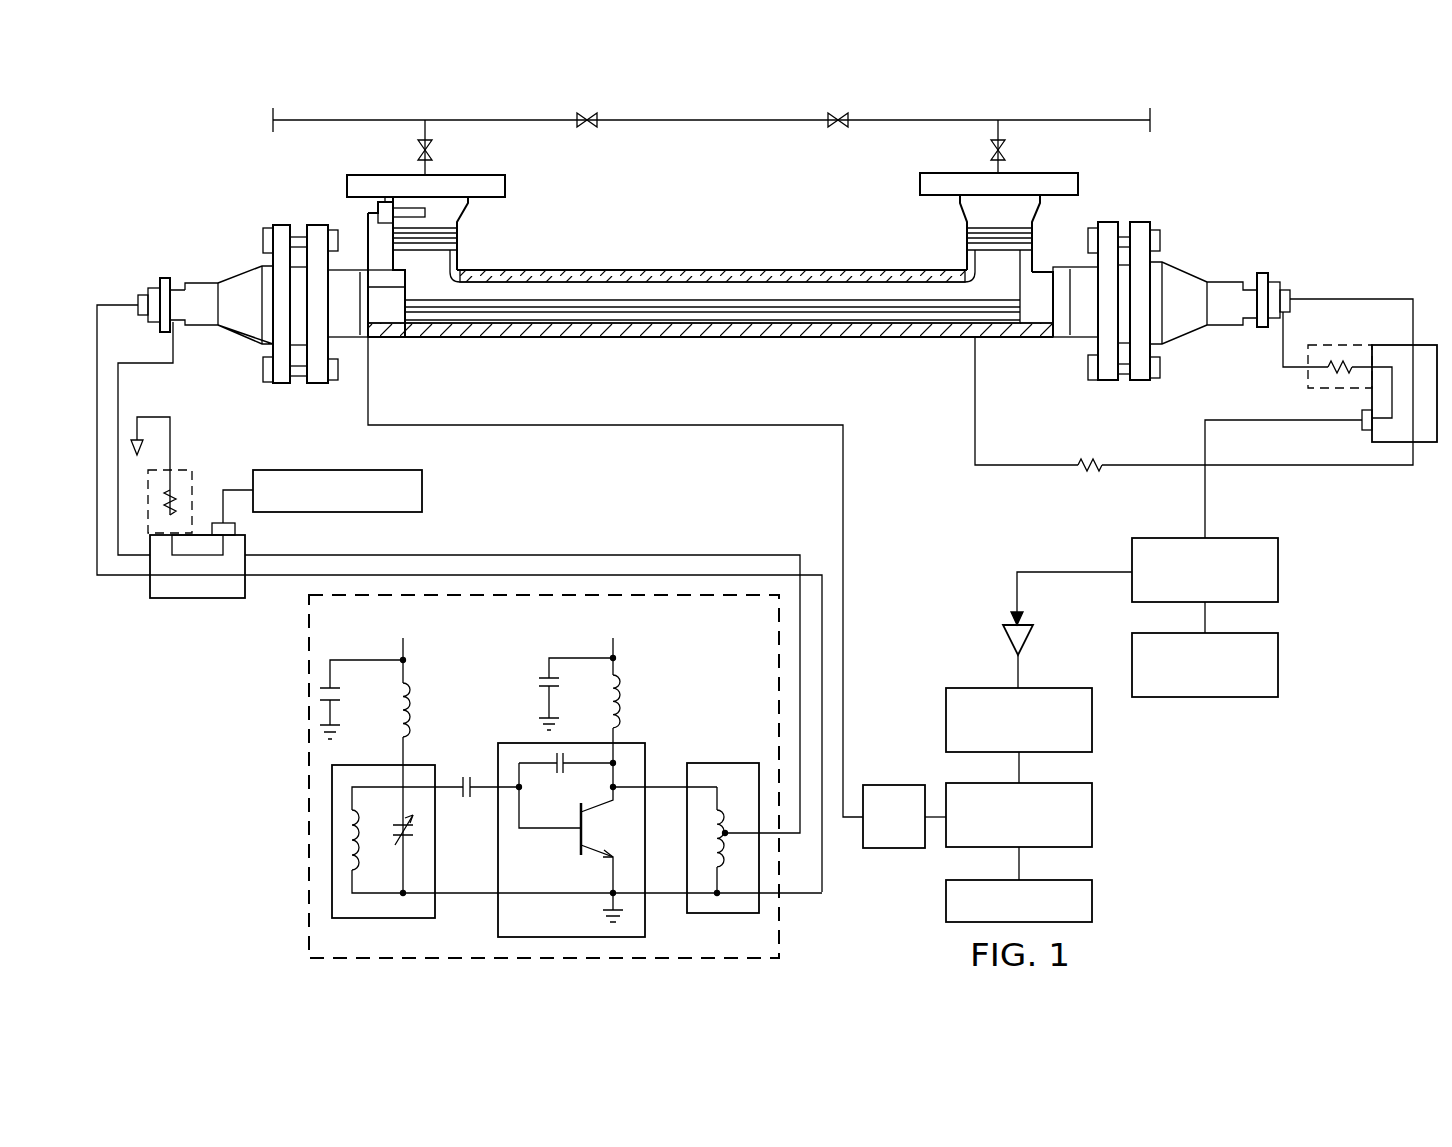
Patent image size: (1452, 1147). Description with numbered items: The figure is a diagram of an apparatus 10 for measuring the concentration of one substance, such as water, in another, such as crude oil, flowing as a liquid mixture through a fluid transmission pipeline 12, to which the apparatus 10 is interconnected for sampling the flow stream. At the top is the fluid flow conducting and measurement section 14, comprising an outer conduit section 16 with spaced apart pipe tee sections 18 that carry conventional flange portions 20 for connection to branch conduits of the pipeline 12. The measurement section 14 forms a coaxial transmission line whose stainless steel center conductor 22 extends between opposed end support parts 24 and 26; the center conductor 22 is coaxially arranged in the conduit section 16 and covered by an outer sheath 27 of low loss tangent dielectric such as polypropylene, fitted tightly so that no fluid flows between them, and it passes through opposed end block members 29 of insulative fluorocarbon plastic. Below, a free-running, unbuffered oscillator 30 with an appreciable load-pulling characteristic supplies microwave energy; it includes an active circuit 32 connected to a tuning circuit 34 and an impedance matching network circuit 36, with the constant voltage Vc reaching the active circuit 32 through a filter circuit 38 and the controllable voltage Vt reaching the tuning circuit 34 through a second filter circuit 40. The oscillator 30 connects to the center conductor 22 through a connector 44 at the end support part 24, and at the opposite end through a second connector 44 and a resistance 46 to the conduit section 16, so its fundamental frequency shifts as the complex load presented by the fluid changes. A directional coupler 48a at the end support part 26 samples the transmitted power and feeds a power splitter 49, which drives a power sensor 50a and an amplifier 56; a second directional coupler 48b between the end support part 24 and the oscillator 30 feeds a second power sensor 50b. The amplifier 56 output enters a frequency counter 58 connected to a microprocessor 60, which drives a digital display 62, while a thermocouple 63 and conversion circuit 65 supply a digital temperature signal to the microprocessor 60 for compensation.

The apparatus 10 is at (1181, 188).
The fluid transmission pipeline 12 is at (712, 124).
The measurement section 14 is at (787, 268).
The outer conduit section 16 is at (636, 269).
The pipe tee sections 18 is at (473, 268).
The flange portions 20 is at (470, 200).
The center conductor 22 is at (692, 318).
The end support part 24 is at (258, 268).
The end support part 26 is at (1172, 268).
The outer sheath 27 is at (810, 321).
The end block members 29 is at (411, 339).
The oscillator 30 is at (306, 808).
The active circuit 32 is at (528, 744).
The tuning circuit 34 is at (382, 763).
The impedance matching network circuit 36 is at (733, 763).
The filter circuit 38 is at (626, 705).
The second filter circuit 40 is at (416, 713).
The connector 44 is at (142, 291).
The resistance 46 is at (1090, 455).
The directional coupler 48a is at (1388, 443).
The second directional coupler 48b is at (201, 599).
The power splitter 49 is at (1280, 569).
The power sensor 50a is at (1280, 666).
The second power sensor 50b is at (341, 469).
The amplifier 56 is at (1030, 645).
The frequency counter 58 is at (1093, 720).
The microprocessor 60 is at (1093, 825).
The digital display 62 is at (1093, 903).
The thermocouple 63 is at (346, 186).
The conversion circuit 65 is at (894, 848).